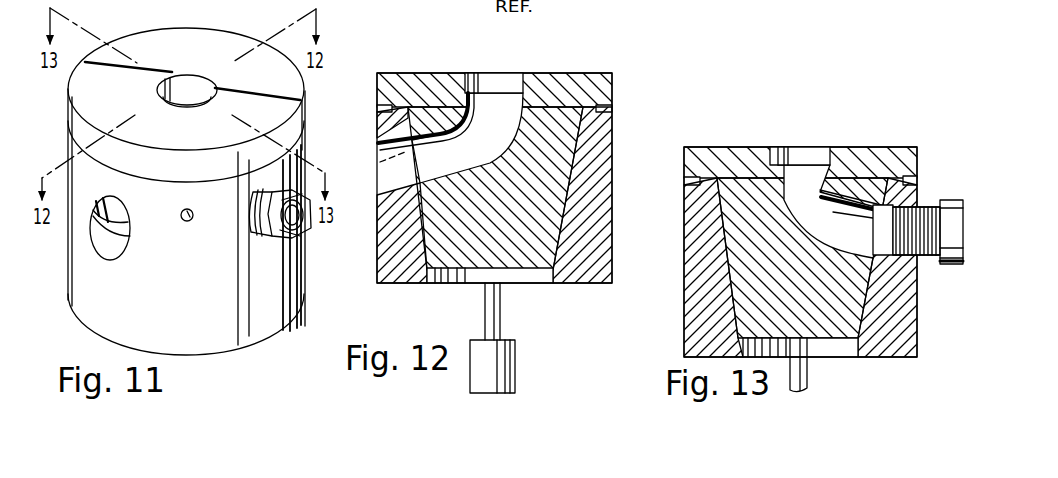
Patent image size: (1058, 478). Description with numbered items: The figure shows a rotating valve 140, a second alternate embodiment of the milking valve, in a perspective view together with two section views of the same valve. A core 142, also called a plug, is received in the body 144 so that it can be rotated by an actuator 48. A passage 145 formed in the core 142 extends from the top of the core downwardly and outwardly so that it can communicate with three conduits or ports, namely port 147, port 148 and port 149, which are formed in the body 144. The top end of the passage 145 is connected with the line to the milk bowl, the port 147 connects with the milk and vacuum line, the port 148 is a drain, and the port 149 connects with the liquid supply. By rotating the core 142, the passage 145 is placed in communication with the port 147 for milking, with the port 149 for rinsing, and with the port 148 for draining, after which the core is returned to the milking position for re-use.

In FIG. 11, the rotating valve 140 is at (311, 137).
In FIG. 12, the rotating valve 140 is at (425, 286).
In FIG. 13, the rotating valve 140 is at (682, 318).
In FIG. 11, the core 142 is at (222, 38).
In FIG. 12, the core 142 is at (612, 90).
In FIG. 13, the core 142 is at (735, 222).
In FIG. 11, the body 144 is at (303, 263).
In FIG. 12, the body 144 is at (612, 138).
In FIG. 13, the body 144 is at (700, 258).
In FIG. 11, the passage 145 is at (191, 90).
In FIG. 12, the passage 145 is at (500, 100).
In FIG. 13, the passage 145 is at (810, 170).
In FIG. 11, the port 147 is at (113, 232).
In FIG. 12, the port 147 is at (390, 168).
In FIG. 11, the port 148 is at (187, 221).
In FIG. 11, the port 149 is at (306, 233).
In FIG. 13, the port 149 is at (950, 265).
In FIG. 12, the actuator 48 is at (515, 366).